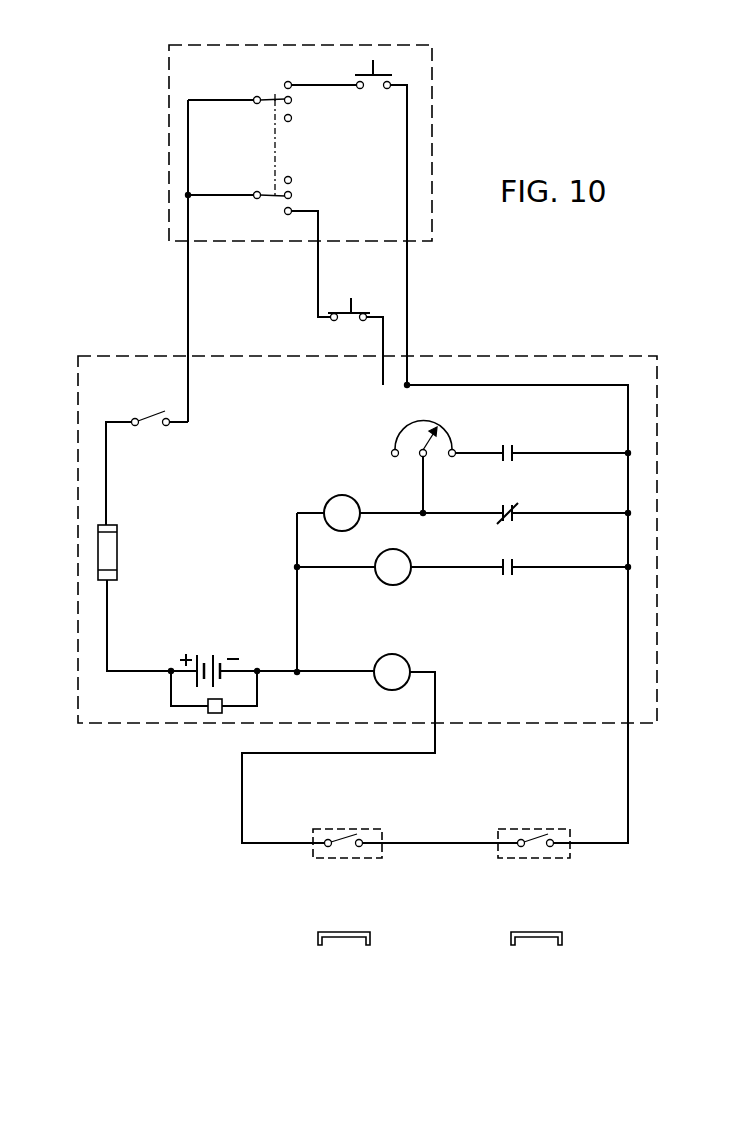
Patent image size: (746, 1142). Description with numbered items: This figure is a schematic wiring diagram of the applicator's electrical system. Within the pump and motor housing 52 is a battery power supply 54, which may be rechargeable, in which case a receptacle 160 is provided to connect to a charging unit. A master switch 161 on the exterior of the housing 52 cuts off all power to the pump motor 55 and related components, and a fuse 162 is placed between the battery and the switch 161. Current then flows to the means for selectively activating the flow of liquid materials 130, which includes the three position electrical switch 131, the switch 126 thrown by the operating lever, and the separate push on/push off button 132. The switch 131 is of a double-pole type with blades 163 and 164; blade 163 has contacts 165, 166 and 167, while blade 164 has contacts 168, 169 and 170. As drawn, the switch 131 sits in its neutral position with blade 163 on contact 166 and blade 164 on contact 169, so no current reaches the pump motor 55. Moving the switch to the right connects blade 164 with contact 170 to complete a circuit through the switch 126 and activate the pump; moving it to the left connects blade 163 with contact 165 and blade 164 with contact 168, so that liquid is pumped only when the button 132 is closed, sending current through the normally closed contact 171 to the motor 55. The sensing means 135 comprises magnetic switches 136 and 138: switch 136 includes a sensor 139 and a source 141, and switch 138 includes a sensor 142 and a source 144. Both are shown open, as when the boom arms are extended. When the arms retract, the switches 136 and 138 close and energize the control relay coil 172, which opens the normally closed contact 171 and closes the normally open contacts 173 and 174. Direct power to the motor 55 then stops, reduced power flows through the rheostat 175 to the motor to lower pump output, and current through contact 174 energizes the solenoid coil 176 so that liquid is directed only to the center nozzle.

The pump and motor housing 52 is at (113, 354).
The battery power supply 54 is at (209, 655).
The pump motor 55 is at (333, 500).
The switch 126 is at (358, 302).
The means for selectively activating the flow of liquid materials 130 is at (434, 77).
The three position electrical switch 131 is at (268, 96).
The push on/push off button 132 is at (383, 72).
The sensing means 135 is at (279, 877).
The magnetic switch 136 is at (517, 828).
The magnetic switch 138 is at (326, 828).
The sensor 139 is at (535, 830).
The source 141 is at (535, 938).
The sensor 142 is at (343, 830).
The source 144 is at (340, 938).
The receptacle 160 is at (215, 714).
The master switch 161 is at (150, 416).
The fuse 162 is at (103, 556).
The blade 163 is at (275, 94).
The blade 164 is at (267, 200).
The contact 165 is at (291, 82).
The contact 166 is at (292, 101).
The contact 167 is at (291, 121).
The contact 168 is at (292, 180).
The contact 169 is at (292, 195).
The contact 170 is at (287, 215).
The normally closed contact 171 is at (517, 519).
The control relay coil 172 is at (388, 684).
The normally open contact 173 is at (506, 447).
The normally open contact 174 is at (506, 578).
The rheostat 175 is at (407, 428).
The solenoid coil 176 is at (400, 563).